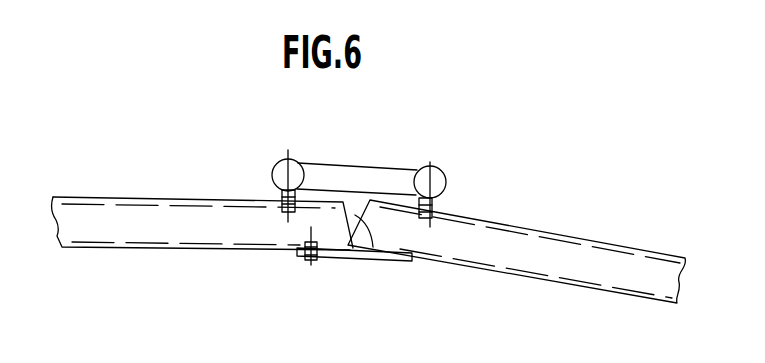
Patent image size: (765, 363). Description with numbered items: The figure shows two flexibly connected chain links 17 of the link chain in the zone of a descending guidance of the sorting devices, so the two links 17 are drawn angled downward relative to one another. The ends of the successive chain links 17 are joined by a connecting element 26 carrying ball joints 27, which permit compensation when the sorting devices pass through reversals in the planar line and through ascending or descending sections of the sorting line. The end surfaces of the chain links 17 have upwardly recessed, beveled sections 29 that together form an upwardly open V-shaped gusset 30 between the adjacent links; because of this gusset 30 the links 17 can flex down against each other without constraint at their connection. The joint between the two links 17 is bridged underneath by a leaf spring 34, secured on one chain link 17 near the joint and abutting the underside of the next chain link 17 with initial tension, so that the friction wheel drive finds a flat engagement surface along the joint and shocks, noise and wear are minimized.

The chain link 17 is at (160, 230).
The connecting element 26 is at (331, 150).
The ball joint 27 is at (280, 170).
The beveled section 29 is at (370, 201).
The gusset 30 is at (374, 247).
The leaf spring 34 is at (342, 253).